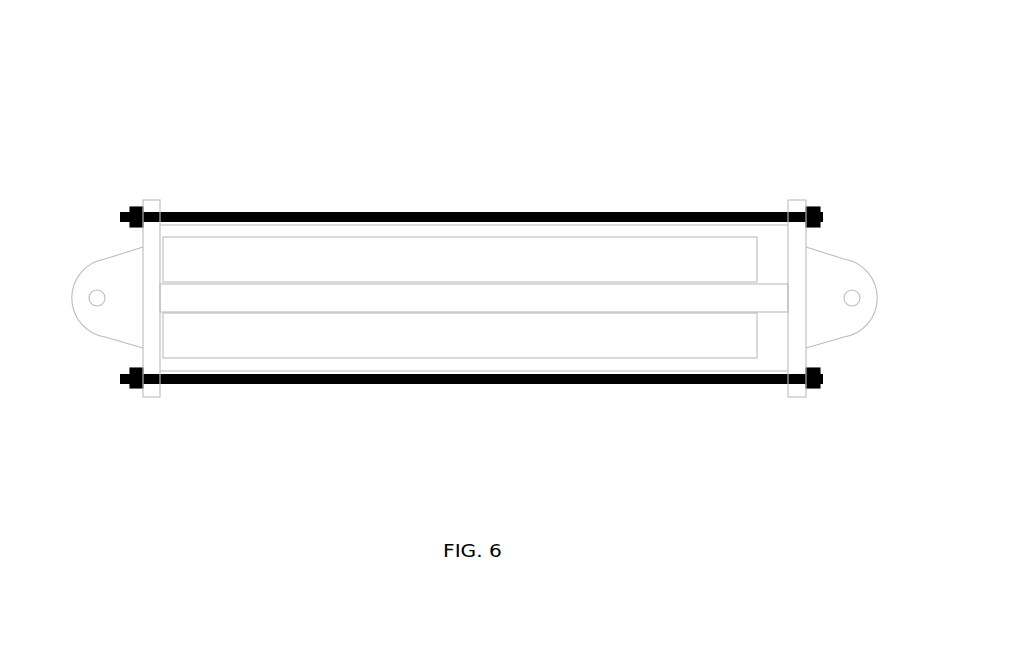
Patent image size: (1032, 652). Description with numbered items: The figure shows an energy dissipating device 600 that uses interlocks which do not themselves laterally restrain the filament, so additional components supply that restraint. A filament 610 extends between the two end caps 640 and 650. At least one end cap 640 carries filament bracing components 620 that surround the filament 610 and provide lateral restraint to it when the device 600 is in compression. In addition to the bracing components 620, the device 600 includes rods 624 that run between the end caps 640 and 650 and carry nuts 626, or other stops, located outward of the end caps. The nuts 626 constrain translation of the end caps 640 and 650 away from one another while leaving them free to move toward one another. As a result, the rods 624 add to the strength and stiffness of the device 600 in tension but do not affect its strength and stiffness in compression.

The energy dissipating device 600 is at (695, 125).
The filament 610 is at (474, 230).
The filament bracing components 620 is at (460, 300).
The rods 624 is at (471, 299).
The nuts 626 is at (500, 299).
The end-cap 640 is at (187, 332).
The end cap 650 is at (764, 329).